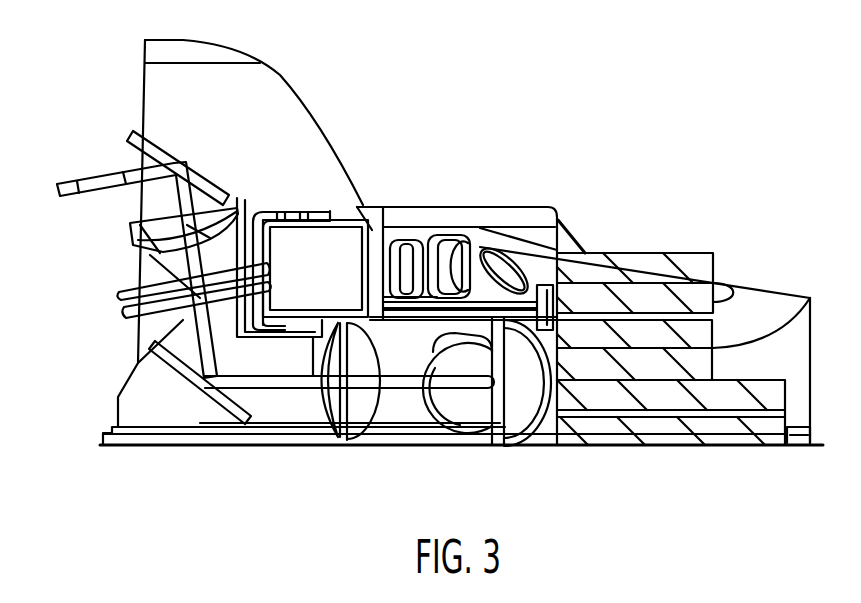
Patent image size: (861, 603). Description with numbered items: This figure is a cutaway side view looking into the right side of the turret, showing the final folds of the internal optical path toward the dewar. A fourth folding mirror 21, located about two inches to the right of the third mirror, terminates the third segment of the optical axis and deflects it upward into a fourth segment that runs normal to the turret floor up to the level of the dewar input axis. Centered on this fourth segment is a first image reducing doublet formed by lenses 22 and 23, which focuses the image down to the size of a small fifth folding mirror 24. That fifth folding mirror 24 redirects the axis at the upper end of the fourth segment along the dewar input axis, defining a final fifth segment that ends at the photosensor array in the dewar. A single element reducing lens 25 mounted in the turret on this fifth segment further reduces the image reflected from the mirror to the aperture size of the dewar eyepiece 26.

The fourth folding mirror 21 is at (447, 425).
The lens 22 is at (434, 405).
The lens 23 is at (437, 335).
The fifth folding mirror 24 is at (503, 275).
The single element reducing lens 25 is at (443, 240).
The dewar eyepiece 26 is at (385, 300).